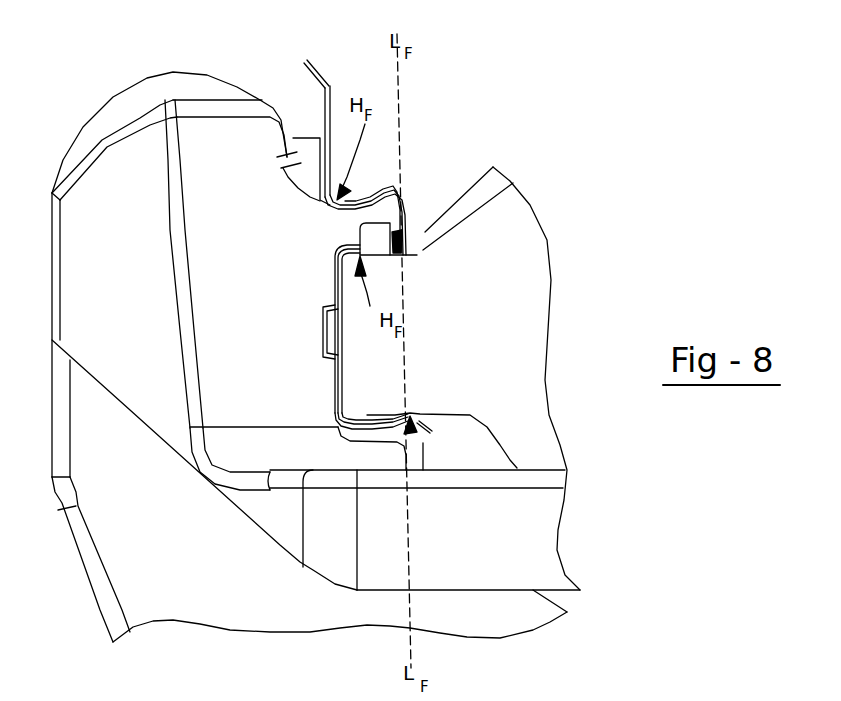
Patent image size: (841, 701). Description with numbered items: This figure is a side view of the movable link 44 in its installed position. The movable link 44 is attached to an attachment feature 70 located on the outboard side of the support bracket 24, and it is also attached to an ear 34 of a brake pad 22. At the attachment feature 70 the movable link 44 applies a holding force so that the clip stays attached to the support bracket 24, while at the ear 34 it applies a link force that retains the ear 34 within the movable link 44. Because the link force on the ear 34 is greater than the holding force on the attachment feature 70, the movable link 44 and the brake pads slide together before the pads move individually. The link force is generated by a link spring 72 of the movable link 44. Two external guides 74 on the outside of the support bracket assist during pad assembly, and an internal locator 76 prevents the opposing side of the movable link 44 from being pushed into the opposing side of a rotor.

The brake pad 22 is at (504, 378).
The support bracket 24 is at (316, 330).
The ear 34 is at (306, 415).
The movable link 44 is at (316, 100).
The attachment feature 70 is at (365, 197).
The link spring 72 is at (482, 435).
The external guide 74 is at (322, 318).
The internal locator 76 is at (465, 198).